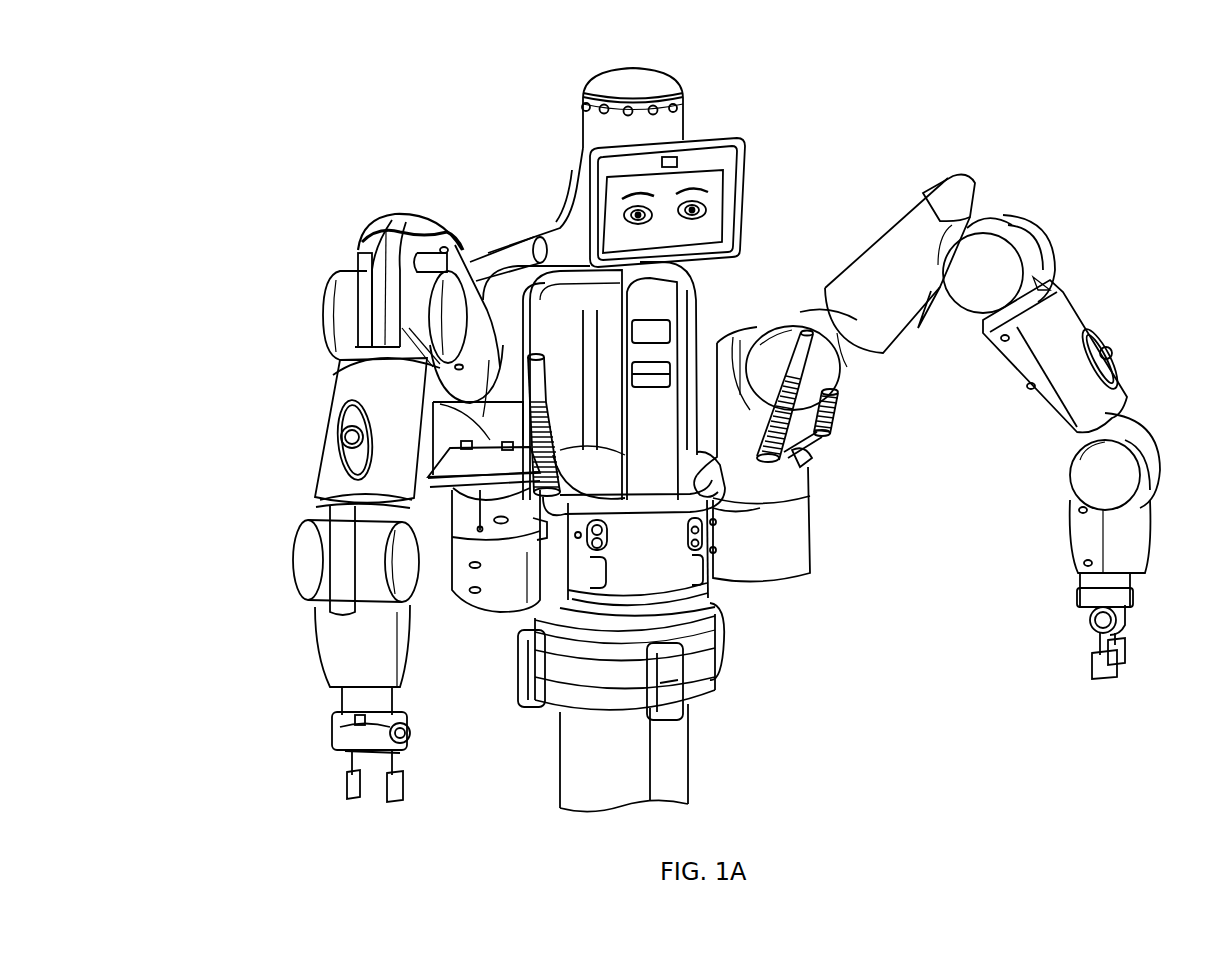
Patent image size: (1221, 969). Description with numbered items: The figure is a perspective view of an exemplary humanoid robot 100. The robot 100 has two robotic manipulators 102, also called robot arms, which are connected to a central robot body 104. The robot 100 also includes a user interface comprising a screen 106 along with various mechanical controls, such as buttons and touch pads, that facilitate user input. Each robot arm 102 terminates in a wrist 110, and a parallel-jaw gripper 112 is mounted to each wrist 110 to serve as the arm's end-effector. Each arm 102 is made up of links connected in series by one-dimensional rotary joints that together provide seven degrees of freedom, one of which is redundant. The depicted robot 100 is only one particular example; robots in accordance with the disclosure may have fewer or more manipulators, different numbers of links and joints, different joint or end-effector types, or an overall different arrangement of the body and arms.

The robot 100 is at (340, 64).
The robotic manipulator 102 is at (298, 429).
The robot body 104 is at (711, 308).
The screen 106 is at (722, 190).
The wrist 110 is at (338, 700).
The parallel-jaw gripper 112 is at (347, 765).